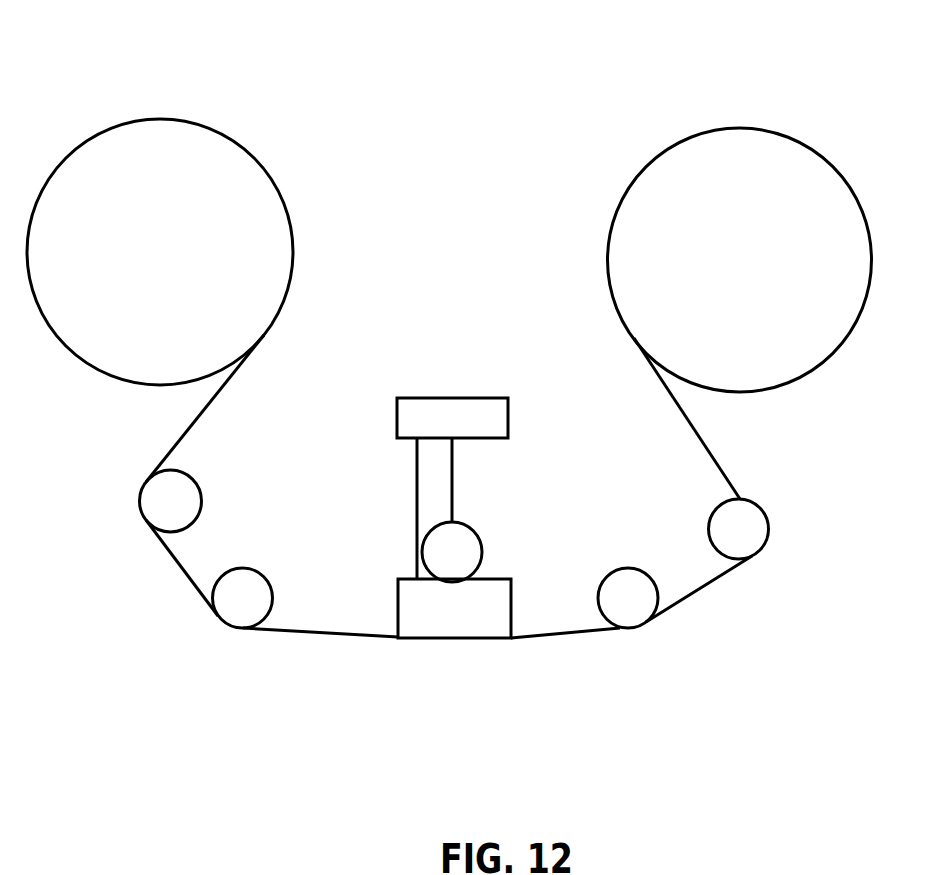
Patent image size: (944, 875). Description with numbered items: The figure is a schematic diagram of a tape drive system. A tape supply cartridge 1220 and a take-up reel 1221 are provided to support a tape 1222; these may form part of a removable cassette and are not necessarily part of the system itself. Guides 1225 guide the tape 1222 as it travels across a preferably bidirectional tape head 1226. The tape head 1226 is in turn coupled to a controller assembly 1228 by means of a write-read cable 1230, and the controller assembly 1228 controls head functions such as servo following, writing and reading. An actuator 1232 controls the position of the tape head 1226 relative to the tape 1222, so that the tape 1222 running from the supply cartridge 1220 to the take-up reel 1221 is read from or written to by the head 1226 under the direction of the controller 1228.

The tape supply cartridge 1220 is at (157, 118).
The take-up reel 1221 is at (738, 128).
The tape 1222 is at (320, 638).
The guides 1225 is at (205, 493).
The tape head 1226 is at (512, 610).
The controller assembly 1228 is at (450, 398).
The write-read cable 1230 is at (417, 548).
The actuator 1232 is at (477, 530).